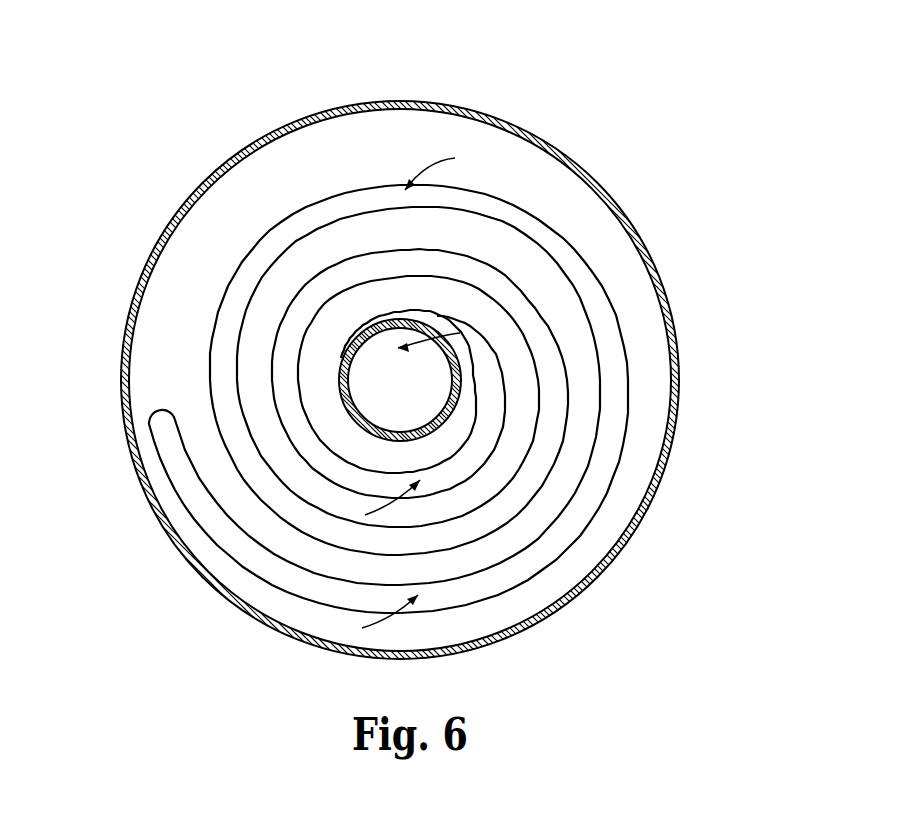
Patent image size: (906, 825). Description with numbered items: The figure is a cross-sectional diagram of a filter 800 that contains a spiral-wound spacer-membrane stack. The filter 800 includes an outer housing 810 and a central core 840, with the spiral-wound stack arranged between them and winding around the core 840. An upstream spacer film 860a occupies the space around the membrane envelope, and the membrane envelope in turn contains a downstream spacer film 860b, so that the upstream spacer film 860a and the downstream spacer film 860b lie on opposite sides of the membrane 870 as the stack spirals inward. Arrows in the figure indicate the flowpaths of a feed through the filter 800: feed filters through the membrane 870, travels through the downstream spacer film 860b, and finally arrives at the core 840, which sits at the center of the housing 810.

The filter 800 is at (565, 80).
The housing 810 is at (197, 190).
The core 840 is at (340, 374).
The membrane 870 is at (597, 273).
The upstream spacer film 860a is at (655, 355).
The downstream spacer film 860b is at (617, 422).